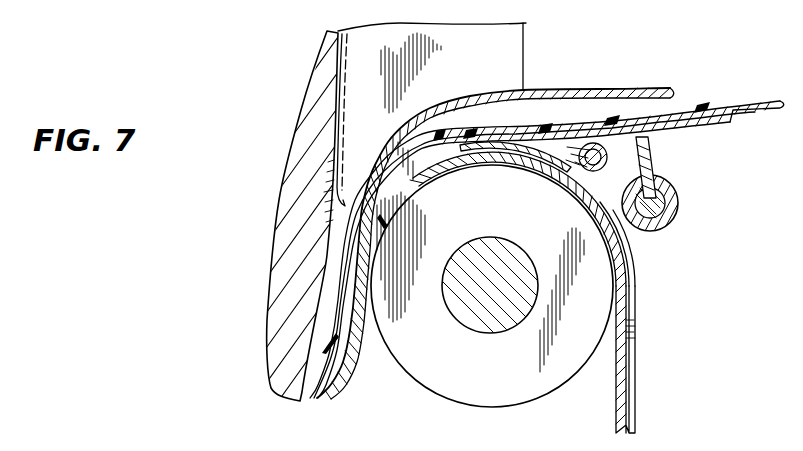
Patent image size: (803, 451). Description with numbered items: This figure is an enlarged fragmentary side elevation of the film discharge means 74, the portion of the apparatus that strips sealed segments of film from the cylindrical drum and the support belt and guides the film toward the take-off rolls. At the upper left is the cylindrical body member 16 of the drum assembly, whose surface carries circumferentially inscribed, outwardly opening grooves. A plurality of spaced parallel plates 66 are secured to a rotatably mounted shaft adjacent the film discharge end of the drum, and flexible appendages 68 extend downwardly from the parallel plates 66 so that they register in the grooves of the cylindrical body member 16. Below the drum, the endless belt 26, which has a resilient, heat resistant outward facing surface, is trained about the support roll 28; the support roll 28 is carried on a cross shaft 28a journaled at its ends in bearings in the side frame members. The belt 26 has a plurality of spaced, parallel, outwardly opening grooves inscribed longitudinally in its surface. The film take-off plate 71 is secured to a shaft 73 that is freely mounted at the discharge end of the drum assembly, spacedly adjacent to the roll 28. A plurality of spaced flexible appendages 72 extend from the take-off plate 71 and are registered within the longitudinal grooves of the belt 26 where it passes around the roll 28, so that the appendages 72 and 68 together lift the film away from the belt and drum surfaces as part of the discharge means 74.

The cylindrical body member 16 is at (331, 32).
The endless belt 26 is at (619, 392).
The support roll 28 is at (522, 385).
The cross shaft 28a is at (486, 319).
The spaced parallel plates 66 is at (508, 49).
The flexible appendages 68 is at (343, 203).
The film take-off plate 71 is at (690, 128).
The flexible appendages 72 is at (469, 151).
The shaft 73 is at (669, 206).
The film discharge means 74 is at (584, 91).